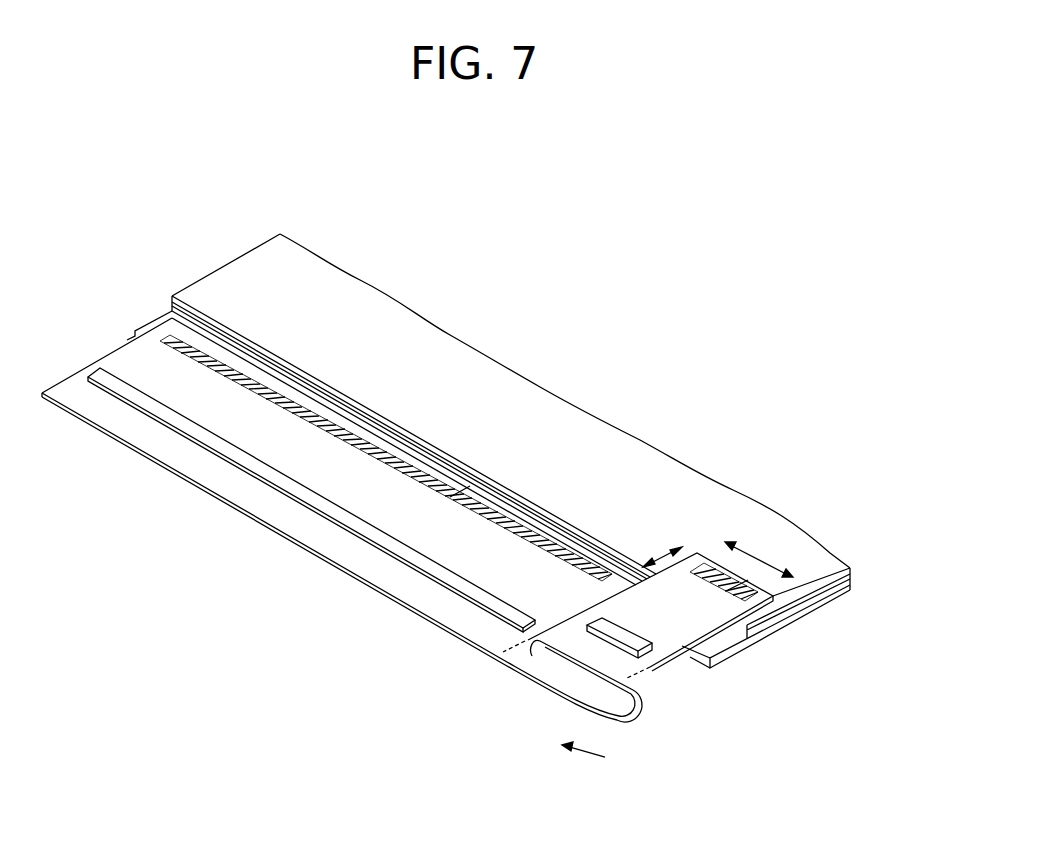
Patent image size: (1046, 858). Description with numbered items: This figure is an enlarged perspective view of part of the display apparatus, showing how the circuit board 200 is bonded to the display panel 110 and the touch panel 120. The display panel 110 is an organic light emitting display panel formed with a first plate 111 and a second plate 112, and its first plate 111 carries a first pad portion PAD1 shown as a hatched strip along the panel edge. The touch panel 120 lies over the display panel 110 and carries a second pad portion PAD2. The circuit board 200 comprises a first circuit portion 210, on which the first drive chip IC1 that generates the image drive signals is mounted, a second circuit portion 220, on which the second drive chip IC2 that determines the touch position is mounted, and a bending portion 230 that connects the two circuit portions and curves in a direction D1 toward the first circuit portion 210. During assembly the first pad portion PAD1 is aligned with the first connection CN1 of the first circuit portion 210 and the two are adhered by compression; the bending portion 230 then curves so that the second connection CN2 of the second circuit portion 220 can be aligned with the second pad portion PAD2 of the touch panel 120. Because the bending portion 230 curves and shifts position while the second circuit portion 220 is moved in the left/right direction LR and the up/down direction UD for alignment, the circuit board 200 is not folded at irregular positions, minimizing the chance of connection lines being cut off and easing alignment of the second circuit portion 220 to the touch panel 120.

The display panel 110 is at (795, 633).
The first plate 111 is at (763, 638).
The second plate 112 is at (800, 606).
The touch panel 120 is at (820, 560).
The circuit board 200 is at (416, 517).
The first circuit portion 210 is at (418, 598).
The second circuit portion 220 is at (615, 569).
The bending portion 230 is at (575, 697).
The first drive chip IC1 is at (282, 490).
The second drive chip IC2 is at (667, 660).
The first pad portion PAD1 is at (390, 453).
The second pad portion PAD2 is at (700, 568).
The first connection CN1 is at (458, 497).
The second connection CN2 is at (735, 592).
The up/down direction UD is at (653, 557).
The left/right direction LR is at (767, 558).
The direction D1 is at (597, 760).